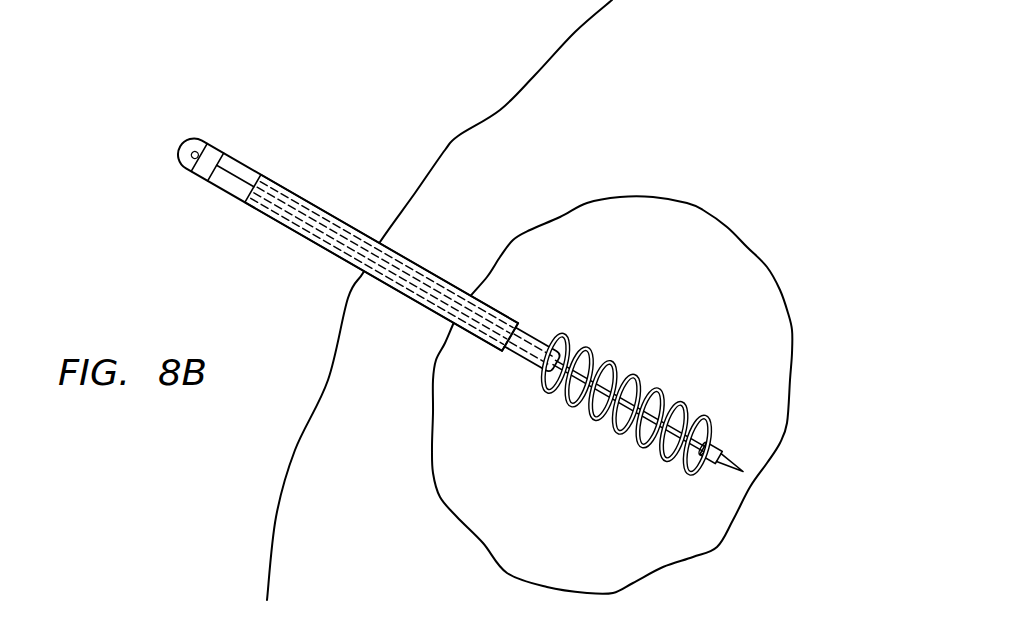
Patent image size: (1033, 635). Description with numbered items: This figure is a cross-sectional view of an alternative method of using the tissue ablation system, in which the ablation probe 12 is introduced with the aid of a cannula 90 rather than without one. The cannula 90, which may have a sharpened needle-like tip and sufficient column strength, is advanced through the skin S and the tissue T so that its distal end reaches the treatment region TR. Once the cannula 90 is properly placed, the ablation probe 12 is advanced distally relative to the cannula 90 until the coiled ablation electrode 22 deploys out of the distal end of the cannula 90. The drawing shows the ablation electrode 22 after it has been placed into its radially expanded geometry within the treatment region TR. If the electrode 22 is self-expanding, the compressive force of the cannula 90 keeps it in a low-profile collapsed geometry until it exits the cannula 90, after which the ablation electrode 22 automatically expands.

The tissue ablation probe 12 is at (437, 345).
The cannula 90 is at (381, 263).
The coiled ablation electrode 22 is at (600, 418).
The skin S is at (458, 134).
The tissue T is at (552, 131).
The treatment region TR is at (705, 265).